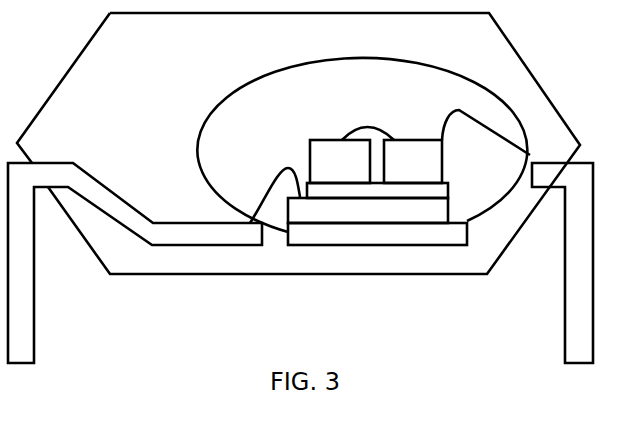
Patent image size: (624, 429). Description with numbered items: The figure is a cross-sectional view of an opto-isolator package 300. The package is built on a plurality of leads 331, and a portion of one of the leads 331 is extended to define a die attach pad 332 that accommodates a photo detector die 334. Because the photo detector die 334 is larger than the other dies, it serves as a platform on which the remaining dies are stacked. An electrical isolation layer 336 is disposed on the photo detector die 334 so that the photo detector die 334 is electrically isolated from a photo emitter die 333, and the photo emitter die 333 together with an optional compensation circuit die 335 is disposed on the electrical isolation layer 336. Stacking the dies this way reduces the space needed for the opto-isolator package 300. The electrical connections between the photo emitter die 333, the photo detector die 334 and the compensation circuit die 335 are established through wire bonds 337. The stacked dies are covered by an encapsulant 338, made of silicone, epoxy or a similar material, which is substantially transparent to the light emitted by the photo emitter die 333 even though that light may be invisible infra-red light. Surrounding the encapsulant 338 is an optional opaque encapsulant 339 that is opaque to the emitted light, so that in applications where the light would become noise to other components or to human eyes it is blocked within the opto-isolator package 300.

The opto-isolator package 300 is at (300, 188).
The leads 331 is at (27, 310).
The die attach pad 332 is at (370, 235).
The photo emitter die 333 is at (399, 172).
The photo detector die 334 is at (352, 205).
The compensation circuit die 335 is at (326, 172).
The electrical isolation layer 336 is at (424, 189).
The wire bonds 337 is at (490, 129).
The encapsulant 338 is at (321, 94).
The opaque encapsulant 339 is at (111, 132).